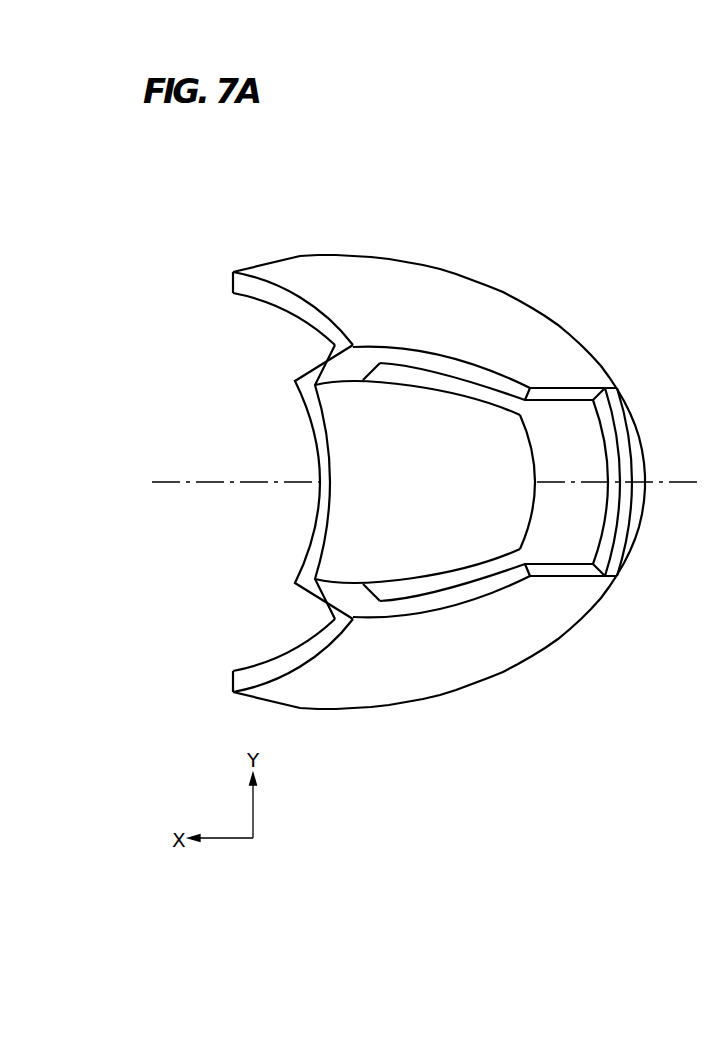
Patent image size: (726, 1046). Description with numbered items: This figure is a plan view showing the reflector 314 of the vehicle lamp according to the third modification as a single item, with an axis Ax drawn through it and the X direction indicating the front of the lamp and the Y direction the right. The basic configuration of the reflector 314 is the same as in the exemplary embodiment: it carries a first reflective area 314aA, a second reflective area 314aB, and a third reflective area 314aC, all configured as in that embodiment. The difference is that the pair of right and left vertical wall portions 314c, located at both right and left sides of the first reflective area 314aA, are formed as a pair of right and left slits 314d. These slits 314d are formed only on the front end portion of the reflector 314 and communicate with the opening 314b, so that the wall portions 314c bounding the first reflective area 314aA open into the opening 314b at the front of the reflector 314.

The reflector 314 is at (535, 255).
The third reflective area 314aC is at (358, 303).
The first reflective area 314aA is at (390, 474).
The vertical wall portions 314c is at (357, 369).
The slits 314d is at (450, 383).
The opening 314b is at (572, 473).
The second reflective area 314aB is at (612, 495).
The axis Ax is at (228, 483).